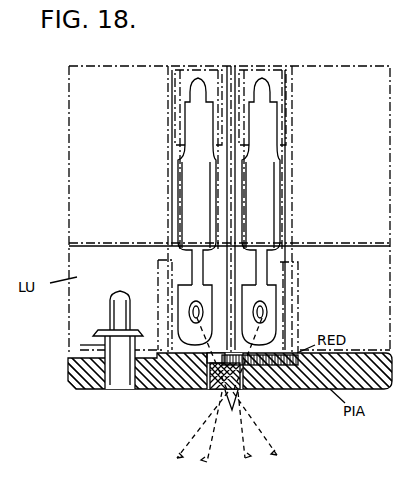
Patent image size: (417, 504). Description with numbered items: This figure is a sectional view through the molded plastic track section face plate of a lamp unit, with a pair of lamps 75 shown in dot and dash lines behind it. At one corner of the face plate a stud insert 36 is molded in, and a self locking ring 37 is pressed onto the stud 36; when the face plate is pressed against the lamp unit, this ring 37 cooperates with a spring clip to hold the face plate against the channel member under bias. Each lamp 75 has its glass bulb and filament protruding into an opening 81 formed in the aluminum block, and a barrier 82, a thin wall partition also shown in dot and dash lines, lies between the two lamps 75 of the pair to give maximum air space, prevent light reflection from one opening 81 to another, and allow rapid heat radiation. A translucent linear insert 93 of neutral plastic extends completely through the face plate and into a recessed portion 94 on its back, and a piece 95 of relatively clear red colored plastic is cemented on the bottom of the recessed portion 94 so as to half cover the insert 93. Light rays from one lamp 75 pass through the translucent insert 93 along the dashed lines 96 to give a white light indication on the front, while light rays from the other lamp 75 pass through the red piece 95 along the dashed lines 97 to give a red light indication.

The stud insert 36 is at (105, 342).
The self locking ring 37 is at (103, 330).
The lamp 75 is at (172, 258).
The opening 81 is at (158, 284).
The barrier 82 is at (299, 290).
The translucent linear insert 93 is at (243, 389).
The recessed portion 94 is at (207, 389).
The piece of red colored plastic material 95 is at (283, 350).
The dashed lines 96 is at (257, 401).
The dashed lines 97 is at (198, 401).